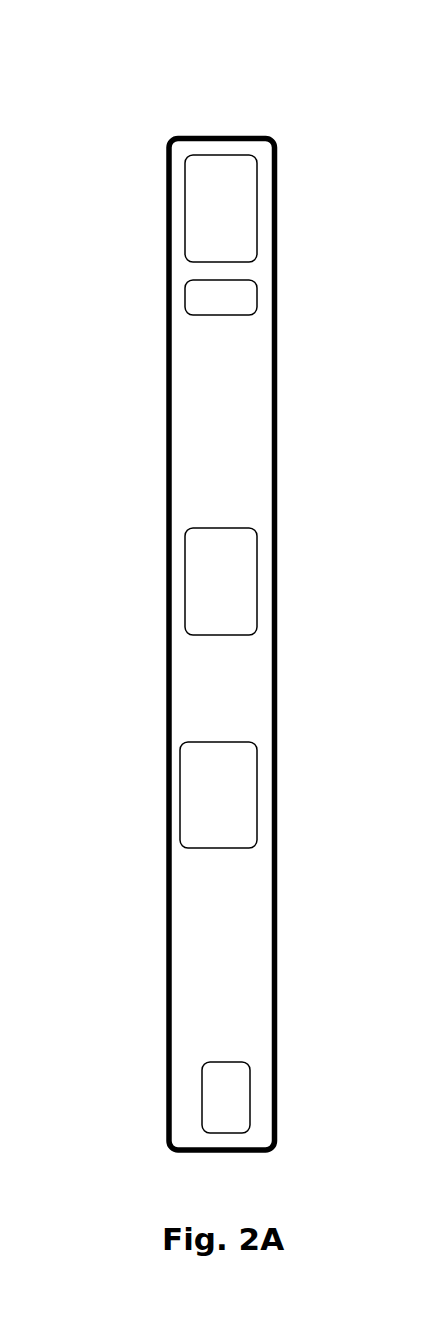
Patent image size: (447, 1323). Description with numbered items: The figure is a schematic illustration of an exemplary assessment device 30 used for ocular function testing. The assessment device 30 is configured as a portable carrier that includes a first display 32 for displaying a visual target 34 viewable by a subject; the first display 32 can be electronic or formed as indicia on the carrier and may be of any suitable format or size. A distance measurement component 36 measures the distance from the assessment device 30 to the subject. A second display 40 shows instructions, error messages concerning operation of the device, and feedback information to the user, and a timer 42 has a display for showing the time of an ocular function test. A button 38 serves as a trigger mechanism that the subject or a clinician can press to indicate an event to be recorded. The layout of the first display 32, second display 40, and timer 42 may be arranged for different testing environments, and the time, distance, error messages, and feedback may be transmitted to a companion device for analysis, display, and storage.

The assessment device 30 is at (275, 584).
The first display 32 is at (221, 175).
The visual target 34 is at (150, 211).
The distance measurement component 36 is at (171, 297).
The button 38 is at (172, 1097).
The second display 40 is at (171, 581).
The timer 42 is at (169, 795).